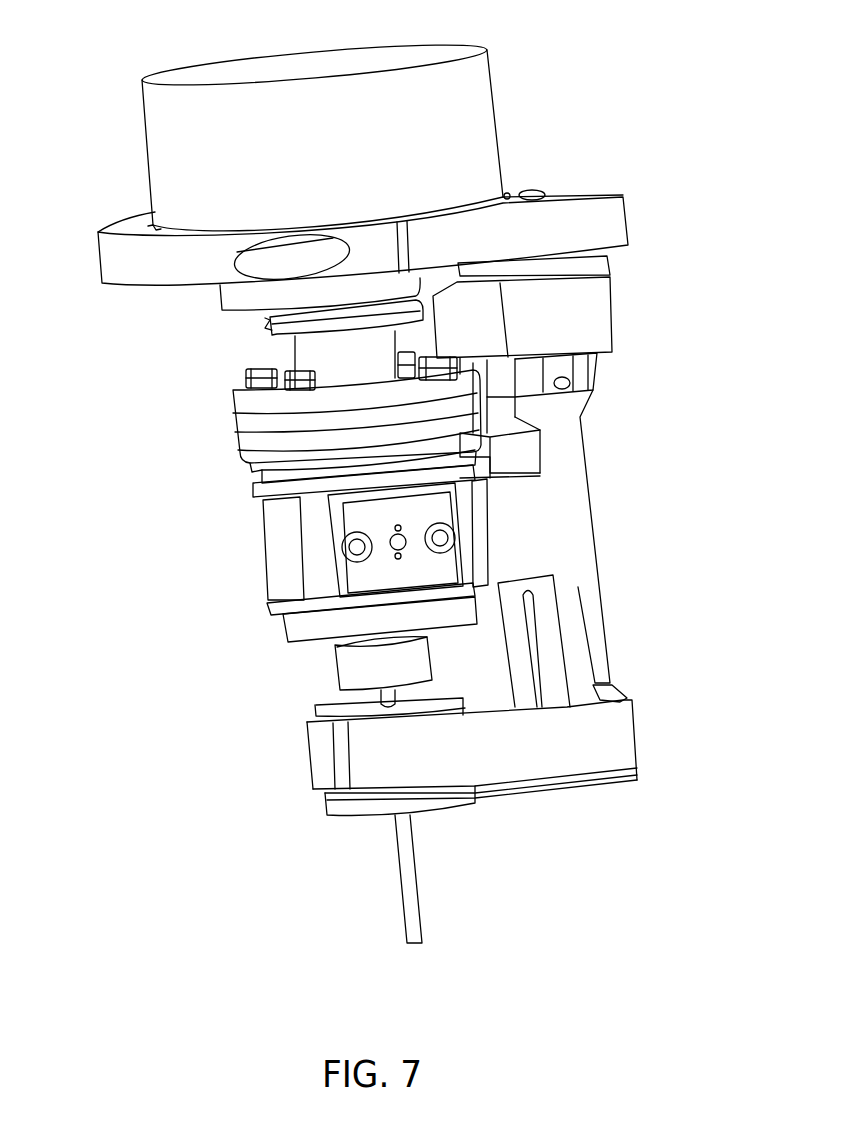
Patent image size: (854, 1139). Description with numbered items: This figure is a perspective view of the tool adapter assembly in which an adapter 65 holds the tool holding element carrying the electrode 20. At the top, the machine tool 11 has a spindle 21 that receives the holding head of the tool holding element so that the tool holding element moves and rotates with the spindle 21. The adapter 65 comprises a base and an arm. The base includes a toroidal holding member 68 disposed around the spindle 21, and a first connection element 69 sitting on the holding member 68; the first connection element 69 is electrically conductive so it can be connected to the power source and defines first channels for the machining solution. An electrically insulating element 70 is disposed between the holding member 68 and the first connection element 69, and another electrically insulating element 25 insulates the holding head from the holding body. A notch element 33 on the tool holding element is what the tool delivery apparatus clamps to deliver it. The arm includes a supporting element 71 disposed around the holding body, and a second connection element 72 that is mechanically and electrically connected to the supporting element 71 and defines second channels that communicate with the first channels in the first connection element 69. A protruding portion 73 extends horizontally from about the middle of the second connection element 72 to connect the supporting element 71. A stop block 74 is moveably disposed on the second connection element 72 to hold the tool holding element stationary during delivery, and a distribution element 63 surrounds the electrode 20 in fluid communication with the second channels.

The machine tool 11 is at (147, 143).
The toroidal holding member 68 is at (96, 255).
The spindle 21 is at (219, 296).
The notch element 33 is at (268, 328).
The electrically insulating element 25 is at (250, 423).
The supporting element 71 is at (275, 537).
The distribution element 63 is at (307, 758).
The electrode 20 is at (399, 893).
The electrically insulating element 70 is at (615, 263).
The first connection element 69 is at (615, 327).
The second connection element 72 is at (582, 515).
The protruding portion 73 is at (503, 543).
The stop block 74 is at (540, 425).
The adapter 65 is at (692, 458).